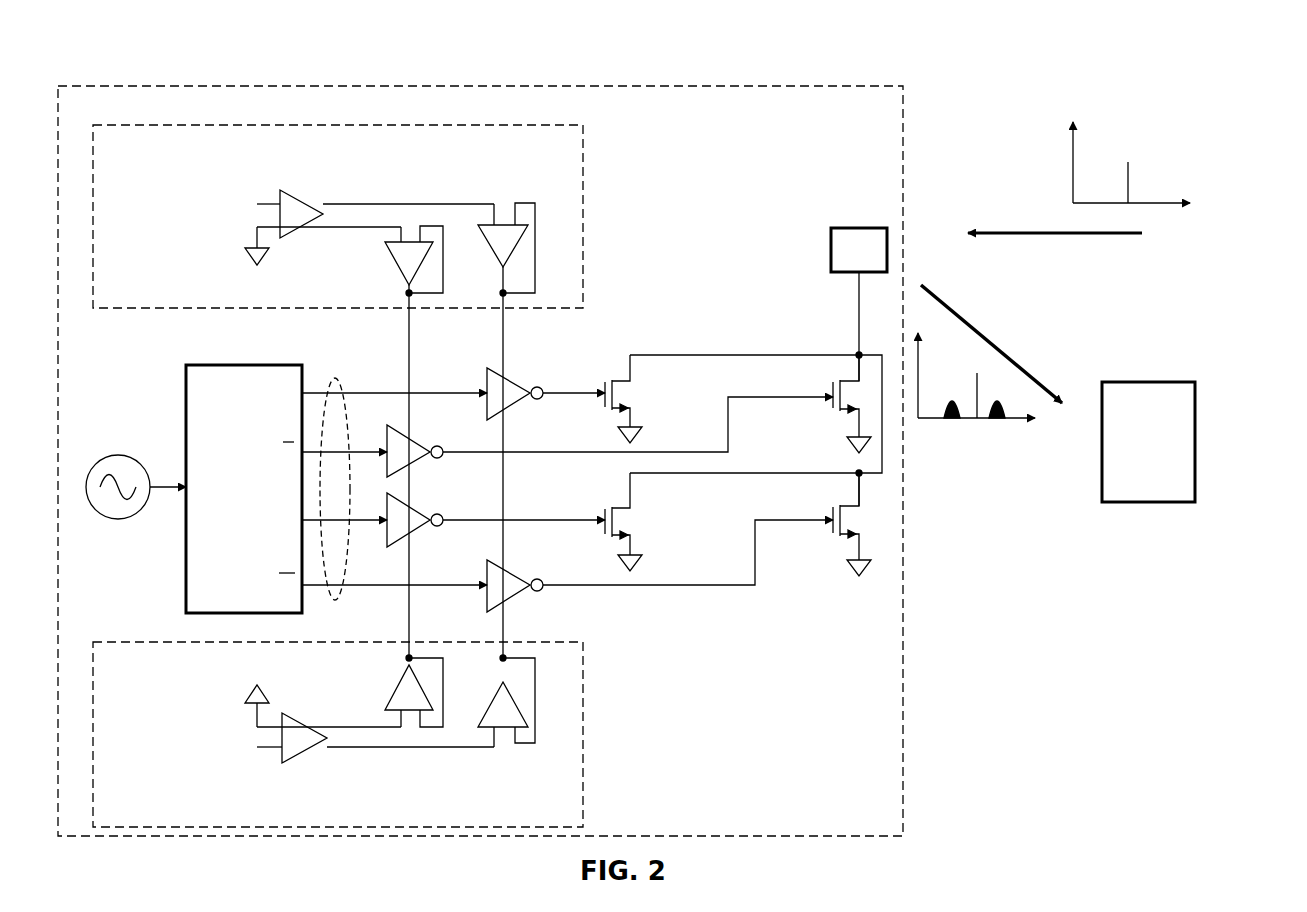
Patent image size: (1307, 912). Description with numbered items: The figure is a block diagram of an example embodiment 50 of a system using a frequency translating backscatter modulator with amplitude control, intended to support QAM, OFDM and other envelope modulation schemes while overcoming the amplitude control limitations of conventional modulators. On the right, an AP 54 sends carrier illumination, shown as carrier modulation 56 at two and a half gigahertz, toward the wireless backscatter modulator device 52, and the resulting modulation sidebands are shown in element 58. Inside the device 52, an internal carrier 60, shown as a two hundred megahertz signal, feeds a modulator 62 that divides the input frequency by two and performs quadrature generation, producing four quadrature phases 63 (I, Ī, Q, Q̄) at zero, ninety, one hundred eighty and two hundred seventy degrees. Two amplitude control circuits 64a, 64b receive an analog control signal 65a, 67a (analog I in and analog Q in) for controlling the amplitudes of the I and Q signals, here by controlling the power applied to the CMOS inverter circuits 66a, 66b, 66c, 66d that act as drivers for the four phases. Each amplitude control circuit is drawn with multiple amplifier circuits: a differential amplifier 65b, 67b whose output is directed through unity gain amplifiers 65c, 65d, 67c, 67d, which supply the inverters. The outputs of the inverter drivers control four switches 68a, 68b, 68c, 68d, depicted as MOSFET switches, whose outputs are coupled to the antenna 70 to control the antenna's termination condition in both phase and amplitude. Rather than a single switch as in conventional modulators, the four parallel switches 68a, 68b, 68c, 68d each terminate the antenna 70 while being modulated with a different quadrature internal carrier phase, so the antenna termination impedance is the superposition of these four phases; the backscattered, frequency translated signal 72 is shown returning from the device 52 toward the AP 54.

The example embodiment 50 is at (1200, 95).
The backscatter modulator device 52 is at (903, 140).
The AP 54 is at (1143, 382).
The carrier modulation 56 is at (1137, 178).
The sidebands 58 is at (955, 490).
The internal carrier 60 is at (118, 455).
The modulator 62 is at (186, 395).
The quadrature phases 63 is at (345, 600).
The amplitude control circuit 64a is at (583, 182).
The amplitude control circuit 64b is at (583, 702).
The analog control signal 65a is at (186, 195).
The differential amplifier 65b is at (290, 190).
The unity gain amplifier 65c is at (395, 268).
The unity gain amplifier 65d is at (494, 220).
The CMOS inverter circuit 66a is at (487, 370).
The CMOS inverter circuit 66b is at (413, 440).
The CMOS inverter circuit 66c is at (400, 497).
The CMOS inverter circuit 66d is at (497, 562).
The analog control signal 67a is at (186, 735).
The differential amplifier 67b is at (290, 762).
The unity gain amplifier 67c is at (395, 690).
The unity gain amplifier 67d is at (500, 745).
The switch 68a is at (605, 380).
The switch 68b is at (833, 415).
The switch 68c is at (605, 505).
The switch 68d is at (850, 540).
The antenna 70 is at (831, 255).
The backscattered modulated signal 72 is at (985, 333).